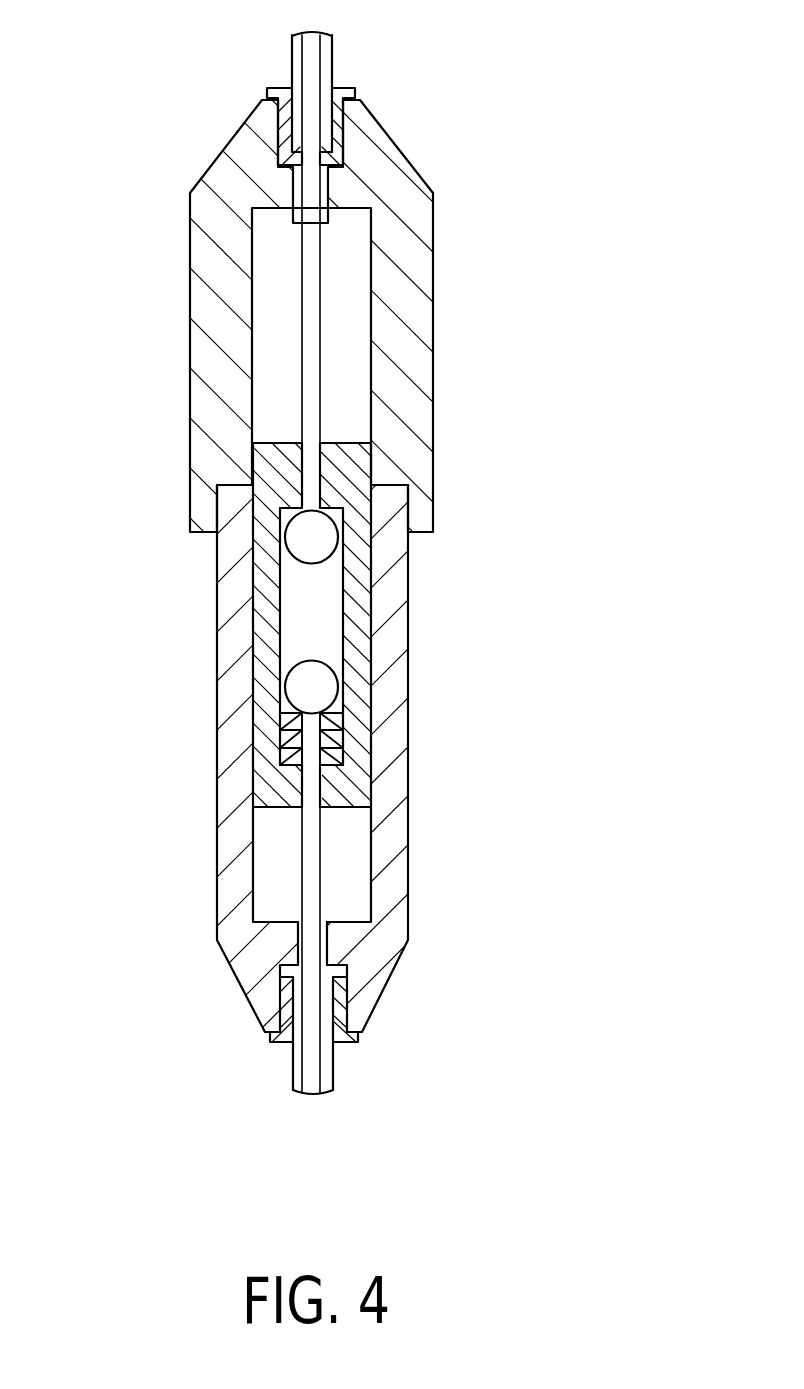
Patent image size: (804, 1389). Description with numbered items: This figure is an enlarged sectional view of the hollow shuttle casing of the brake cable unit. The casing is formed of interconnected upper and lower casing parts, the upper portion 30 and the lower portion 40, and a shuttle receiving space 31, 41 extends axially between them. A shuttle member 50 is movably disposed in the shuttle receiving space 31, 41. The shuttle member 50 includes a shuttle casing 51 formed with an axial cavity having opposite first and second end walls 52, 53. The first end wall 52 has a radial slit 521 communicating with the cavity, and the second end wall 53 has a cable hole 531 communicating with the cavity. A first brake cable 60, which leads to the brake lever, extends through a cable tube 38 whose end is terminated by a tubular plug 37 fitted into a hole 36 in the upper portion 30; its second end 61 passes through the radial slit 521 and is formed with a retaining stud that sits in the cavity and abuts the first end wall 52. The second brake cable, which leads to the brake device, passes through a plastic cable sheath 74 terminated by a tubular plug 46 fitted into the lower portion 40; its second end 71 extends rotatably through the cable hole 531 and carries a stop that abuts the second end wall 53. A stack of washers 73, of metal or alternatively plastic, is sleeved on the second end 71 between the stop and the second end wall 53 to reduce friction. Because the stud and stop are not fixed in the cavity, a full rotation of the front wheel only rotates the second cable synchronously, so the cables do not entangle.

The upper portion 30 is at (444, 275).
The shuttle receiving space 31 is at (367, 260).
The hole 36 is at (362, 112).
The tubular plug 37 is at (282, 139).
The cable tube 38 is at (293, 62).
The lower portion 40 is at (416, 848).
The shuttle receiving space 41 is at (352, 887).
The tubular plug 46 is at (287, 993).
The shuttle member 50 is at (380, 645).
The shuttle casing 51 is at (293, 618).
The first end wall 52 is at (287, 443).
The radial slit 521 is at (300, 462).
The second end wall 53 is at (255, 838).
The cable hole 531 is at (298, 783).
The first brake cable 60 is at (318, 637).
The second end 61 is at (298, 528).
The second end 71 is at (328, 688).
The washers 73 is at (343, 735).
The cable sheath 74 is at (293, 1058).